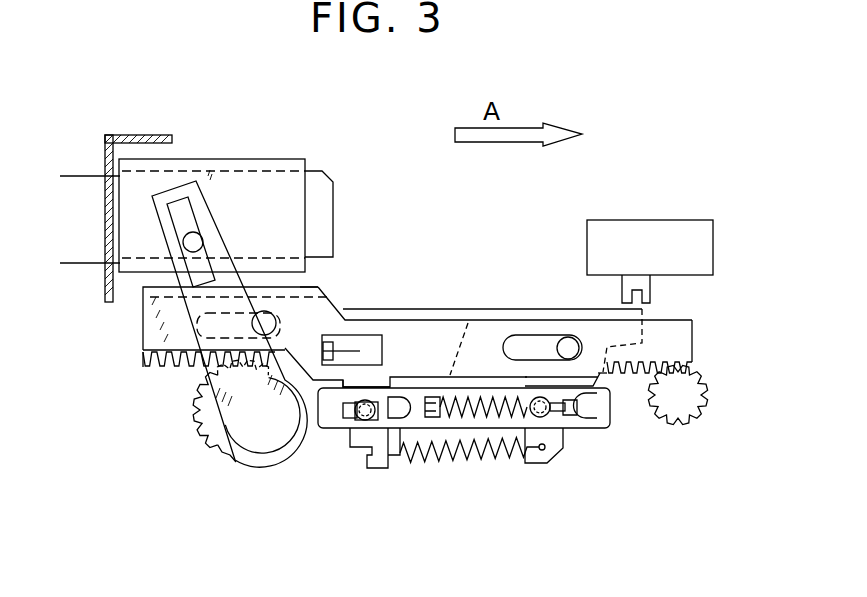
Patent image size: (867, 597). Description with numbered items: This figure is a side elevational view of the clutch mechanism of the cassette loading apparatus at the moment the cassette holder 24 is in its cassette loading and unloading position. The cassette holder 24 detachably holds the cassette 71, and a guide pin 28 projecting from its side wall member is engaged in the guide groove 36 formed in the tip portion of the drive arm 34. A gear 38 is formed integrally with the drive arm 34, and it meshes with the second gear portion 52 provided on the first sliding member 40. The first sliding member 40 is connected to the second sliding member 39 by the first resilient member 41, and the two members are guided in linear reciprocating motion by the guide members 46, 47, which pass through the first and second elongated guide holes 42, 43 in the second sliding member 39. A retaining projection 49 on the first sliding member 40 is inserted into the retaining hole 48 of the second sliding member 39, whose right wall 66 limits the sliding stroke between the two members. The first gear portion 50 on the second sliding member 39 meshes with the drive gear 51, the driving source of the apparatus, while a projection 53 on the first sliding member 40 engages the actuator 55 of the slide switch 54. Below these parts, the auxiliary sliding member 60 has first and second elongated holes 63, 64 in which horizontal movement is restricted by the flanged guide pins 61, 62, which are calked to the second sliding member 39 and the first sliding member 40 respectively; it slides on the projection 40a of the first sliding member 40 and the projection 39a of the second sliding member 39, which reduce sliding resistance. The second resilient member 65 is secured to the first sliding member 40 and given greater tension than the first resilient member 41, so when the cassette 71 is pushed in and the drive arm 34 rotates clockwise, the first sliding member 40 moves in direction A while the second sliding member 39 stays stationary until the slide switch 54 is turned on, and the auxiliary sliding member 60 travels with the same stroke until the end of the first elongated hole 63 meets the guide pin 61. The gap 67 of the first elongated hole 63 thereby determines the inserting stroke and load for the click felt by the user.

The cassette holder 24 is at (283, 163).
The guide pin 28 is at (195, 237).
The drive arm 34 is at (178, 279).
The guide groove 36 is at (182, 207).
The gear 38 is at (212, 437).
The second sliding member 39 is at (303, 289).
The projection 39a is at (347, 390).
The first sliding member 40 is at (453, 317).
The projection 40a is at (543, 387).
The first resilient member 41 is at (457, 456).
The first elongated guide hole 42 is at (197, 380).
The second elongated guide hole 43 is at (513, 343).
The guide member 46 is at (302, 283).
The guide member 47 is at (567, 347).
The retaining hole 48 is at (360, 347).
The retaining projection 49 is at (338, 347).
The first gear portion 50 is at (660, 363).
The drive gear 51 is at (693, 420).
The second gear portion 52 is at (160, 360).
The projection 53 is at (642, 308).
The slide switch 54 is at (623, 230).
The actuator 55 is at (645, 282).
The auxiliary sliding member 60 is at (610, 417).
The guide pin 61 is at (380, 460).
The guide pin 62 is at (547, 418).
The first elongated hole 63 is at (397, 420).
The second elongated hole 64 is at (580, 413).
The second resilient member 65 is at (478, 418).
The right wall 66 is at (382, 352).
The gap 67 is at (343, 412).
The cassette 71 is at (328, 190).